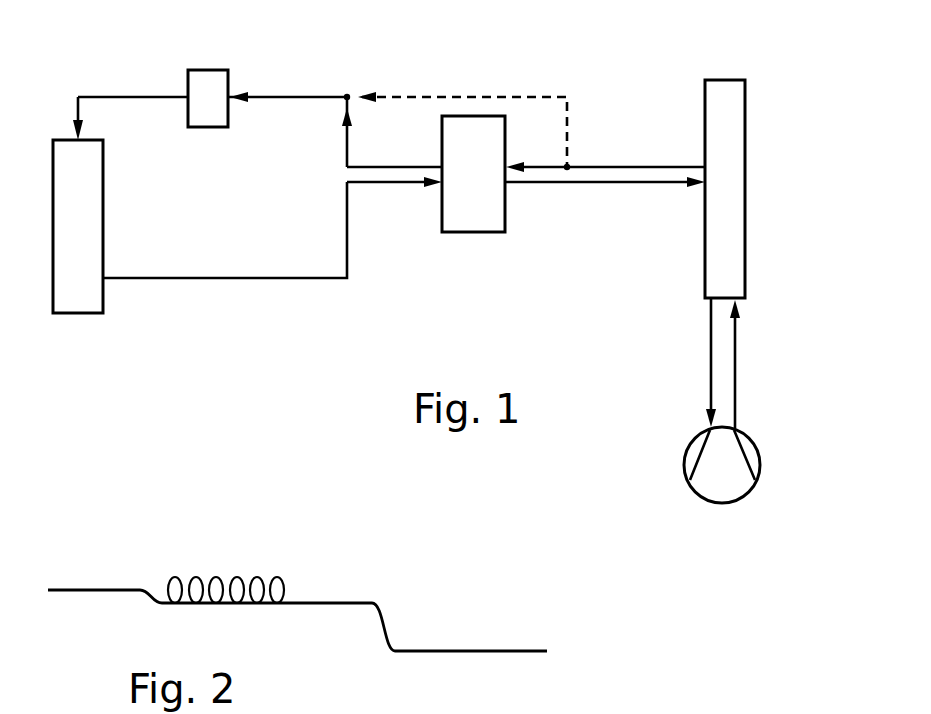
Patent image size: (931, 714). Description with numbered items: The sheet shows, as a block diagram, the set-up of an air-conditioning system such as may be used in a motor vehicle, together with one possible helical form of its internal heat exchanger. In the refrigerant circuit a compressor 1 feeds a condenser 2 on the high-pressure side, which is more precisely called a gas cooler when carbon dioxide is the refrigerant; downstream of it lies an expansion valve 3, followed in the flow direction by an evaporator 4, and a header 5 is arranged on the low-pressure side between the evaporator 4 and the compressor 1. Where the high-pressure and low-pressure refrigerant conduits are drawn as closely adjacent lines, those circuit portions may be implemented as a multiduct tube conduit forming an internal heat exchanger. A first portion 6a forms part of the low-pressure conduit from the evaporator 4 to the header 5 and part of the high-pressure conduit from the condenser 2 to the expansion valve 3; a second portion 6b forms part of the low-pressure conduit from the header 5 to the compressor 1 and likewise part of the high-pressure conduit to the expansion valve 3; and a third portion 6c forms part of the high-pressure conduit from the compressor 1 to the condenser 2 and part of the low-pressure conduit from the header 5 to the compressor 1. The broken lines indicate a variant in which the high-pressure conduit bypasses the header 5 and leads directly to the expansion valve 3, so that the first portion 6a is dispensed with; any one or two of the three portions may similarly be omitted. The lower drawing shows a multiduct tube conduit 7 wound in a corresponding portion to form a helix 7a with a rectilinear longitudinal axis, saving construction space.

In FIG. 1, the compressor 1 is at (722, 487).
In FIG. 1, the condenser 2 is at (724, 95).
In FIG. 1, the expansion valve 3 is at (205, 108).
In FIG. 1, the evaporator 4 is at (78, 296).
In FIG. 1, the header 5 is at (472, 218).
In FIG. 1, the first portion 6a is at (388, 200).
In FIG. 1, the second portion 6b is at (612, 150).
In FIG. 1, the third portion 6c is at (752, 370).
In FIG. 2, the multiduct tube conduit 7 is at (310, 584).
In FIG. 2, the helix 7a is at (237, 578).